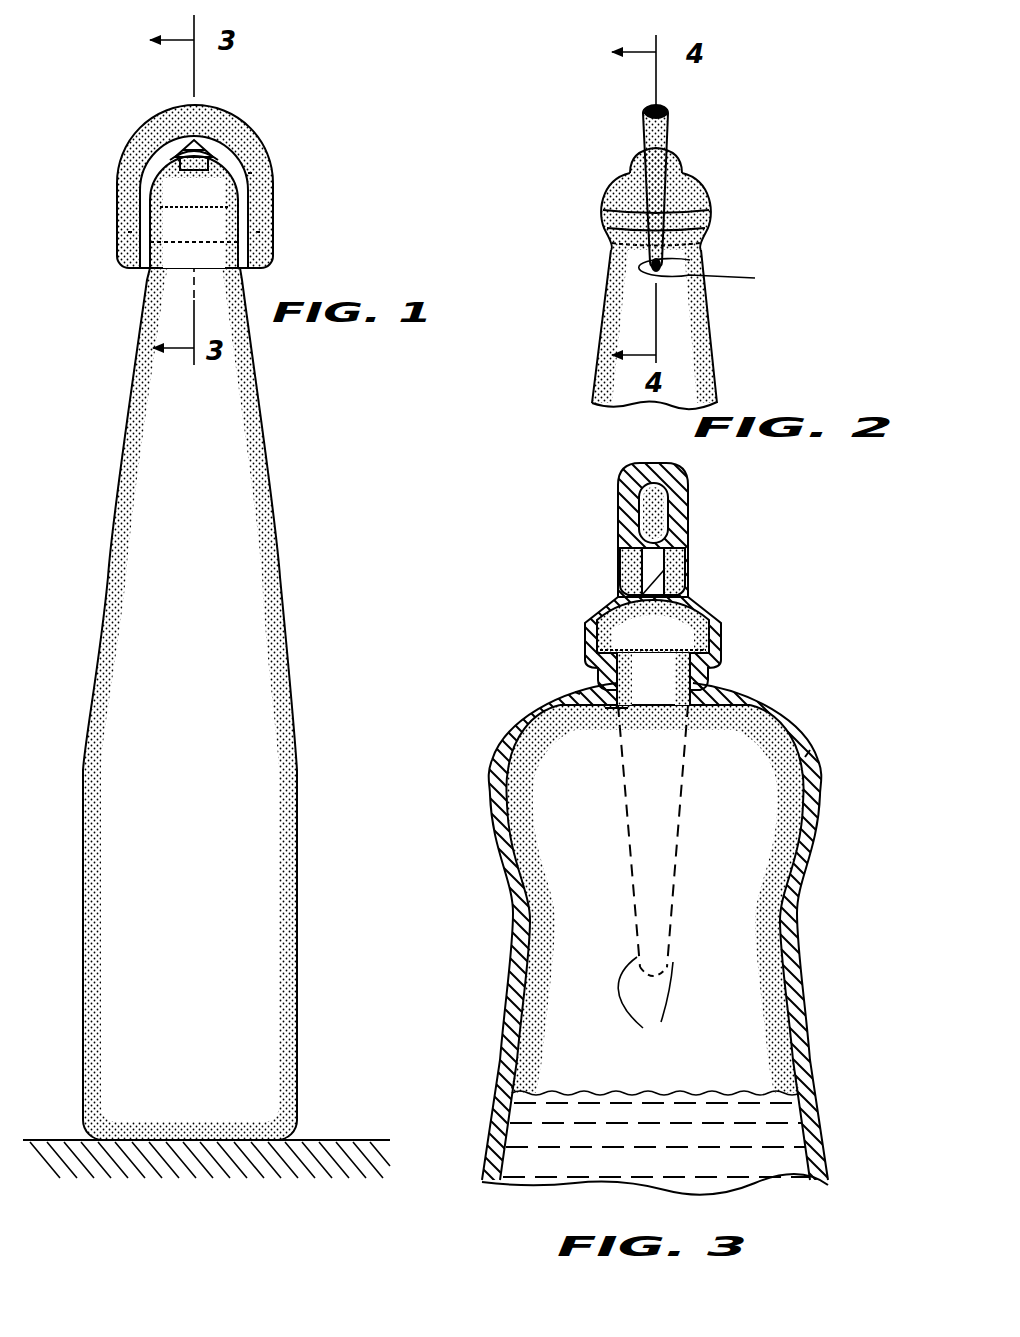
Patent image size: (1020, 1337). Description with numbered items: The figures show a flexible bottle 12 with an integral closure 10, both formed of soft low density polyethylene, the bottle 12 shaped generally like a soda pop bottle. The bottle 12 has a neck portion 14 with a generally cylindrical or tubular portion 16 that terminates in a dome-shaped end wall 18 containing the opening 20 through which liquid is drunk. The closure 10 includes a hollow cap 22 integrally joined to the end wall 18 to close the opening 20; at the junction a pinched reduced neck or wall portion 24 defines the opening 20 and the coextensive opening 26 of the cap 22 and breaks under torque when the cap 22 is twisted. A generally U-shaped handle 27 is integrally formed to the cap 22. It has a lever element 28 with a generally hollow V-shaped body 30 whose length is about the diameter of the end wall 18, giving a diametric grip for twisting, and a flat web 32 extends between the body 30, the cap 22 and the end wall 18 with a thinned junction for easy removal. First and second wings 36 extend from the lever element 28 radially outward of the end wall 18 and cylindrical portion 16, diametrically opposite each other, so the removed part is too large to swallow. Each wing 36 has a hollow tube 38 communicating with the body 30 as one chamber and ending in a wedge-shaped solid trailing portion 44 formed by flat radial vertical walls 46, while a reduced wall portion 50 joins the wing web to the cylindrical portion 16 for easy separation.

In FIG. 1, the closure 10 is at (218, 136).
In FIG. 2, the closure 10 is at (668, 184).
In FIG. 3, the closure 10 is at (677, 753).
In FIG. 1, the bottle 12 is at (240, 704).
In FIG. 1, the neck portion 14 is at (263, 462).
In FIG. 2, the neck portion 14 is at (710, 352).
In FIG. 3, the neck portion 14 is at (809, 1042).
In FIG. 2, the generally cylindrical or tubular portion 16 is at (706, 202).
In FIG. 3, the generally cylindrical or tubular portion 16 is at (812, 757).
In FIG. 2, the end wall 18 is at (684, 176).
In FIG. 3, the end wall 18 is at (579, 694).
In FIG. 3, the opening 20 is at (662, 707).
In FIG. 1, the cap 22 is at (183, 133).
In FIG. 3, the cap 22 is at (718, 622).
In FIG. 2, the reduced neck or wall portion 24 is at (630, 168).
In FIG. 3, the reduced neck or wall portion 24 is at (703, 679).
In FIG. 3, the opening 26 is at (622, 708).
In FIG. 1, the handle 27 is at (272, 147).
In FIG. 2, the handle 27 is at (671, 109).
In FIG. 3, the handle 27 is at (692, 483).
In FIG. 1, the lever element 28 is at (214, 104).
In FIG. 2, the lever element 28 is at (641, 112).
In FIG. 3, the lever element 28 is at (616, 513).
In FIG. 1, the body 30 is at (230, 143).
In FIG. 3, the body 30 is at (669, 514).
In FIG. 1, the web 32 is at (175, 138).
In FIG. 3, the web 32 is at (686, 568).
In FIG. 1, the wings 36 is at (274, 208).
In FIG. 2, the wings 36 is at (658, 229).
In FIG. 3, the wings 36 is at (684, 790).
In FIG. 1, the tube 38 is at (252, 173).
In FIG. 1, the trailing portion 44 is at (130, 232).
In FIG. 2, the trailing portion 44 is at (694, 229).
In FIG. 3, the trailing portion 44 is at (673, 894).
In FIG. 2, the vertical walls 46 is at (709, 273).
In FIG. 3, the vertical walls 46 is at (648, 1000).
In FIG. 1, the reduced wall portion 50 is at (268, 253).